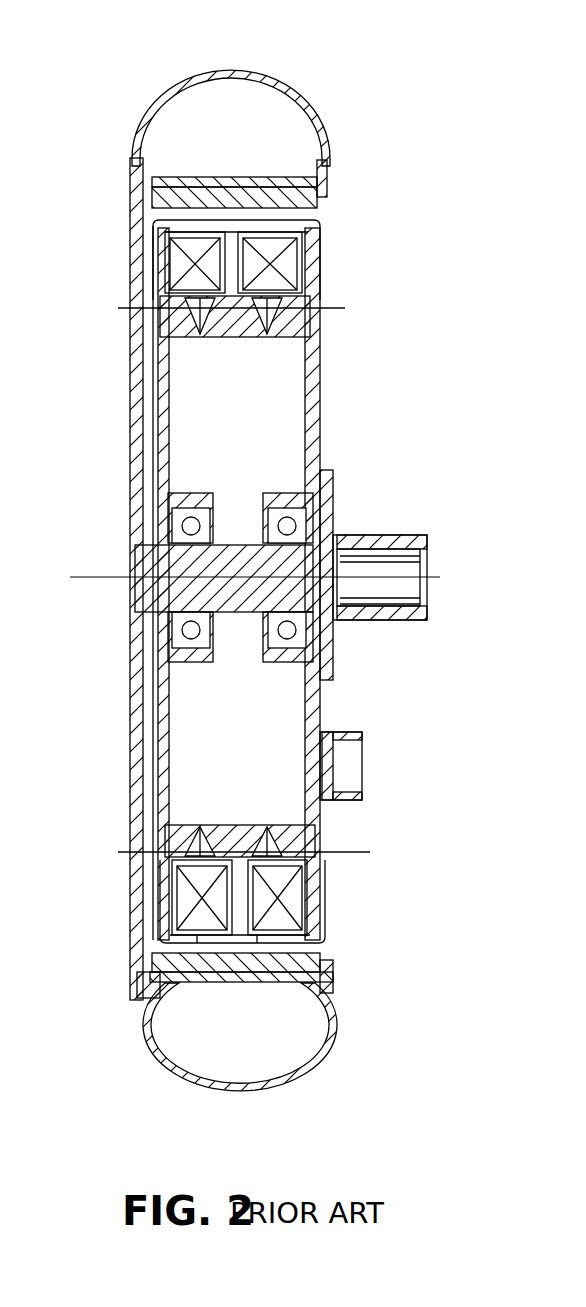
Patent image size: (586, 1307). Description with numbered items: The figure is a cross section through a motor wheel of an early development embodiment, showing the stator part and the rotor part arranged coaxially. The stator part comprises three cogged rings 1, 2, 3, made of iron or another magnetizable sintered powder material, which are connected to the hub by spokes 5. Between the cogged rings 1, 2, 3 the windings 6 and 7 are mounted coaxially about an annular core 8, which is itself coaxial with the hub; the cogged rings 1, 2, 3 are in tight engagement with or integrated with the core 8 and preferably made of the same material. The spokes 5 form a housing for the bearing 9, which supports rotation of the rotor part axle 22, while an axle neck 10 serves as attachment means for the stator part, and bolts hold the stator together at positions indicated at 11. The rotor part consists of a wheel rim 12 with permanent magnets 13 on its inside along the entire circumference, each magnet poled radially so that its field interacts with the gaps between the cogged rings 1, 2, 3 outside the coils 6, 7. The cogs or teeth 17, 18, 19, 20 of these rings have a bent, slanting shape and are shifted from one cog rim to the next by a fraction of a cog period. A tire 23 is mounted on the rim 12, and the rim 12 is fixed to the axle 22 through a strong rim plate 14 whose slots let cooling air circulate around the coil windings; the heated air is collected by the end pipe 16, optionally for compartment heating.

The cogged ring 1 is at (180, 268).
The cogged ring 2 is at (190, 312).
The cogged ring 3 is at (307, 262).
The spokes 5 is at (162, 432).
The winding 6 is at (175, 245).
The winding 7 is at (290, 280).
The annular core 8 is at (230, 327).
The bearing 9 is at (293, 525).
The axle neck 10 is at (395, 535).
The bolt positions 11 is at (322, 308).
The wheel rim 12 is at (233, 175).
The permanent magnets 13 is at (255, 197).
The rim plate 14 is at (132, 730).
The end pipe 16 is at (345, 760).
The cog 17 is at (158, 968).
The cog 18 is at (197, 942).
The cog 19 is at (257, 942).
The cog 20 is at (320, 960).
The axle 22 is at (173, 586).
The tire 23 is at (331, 1020).